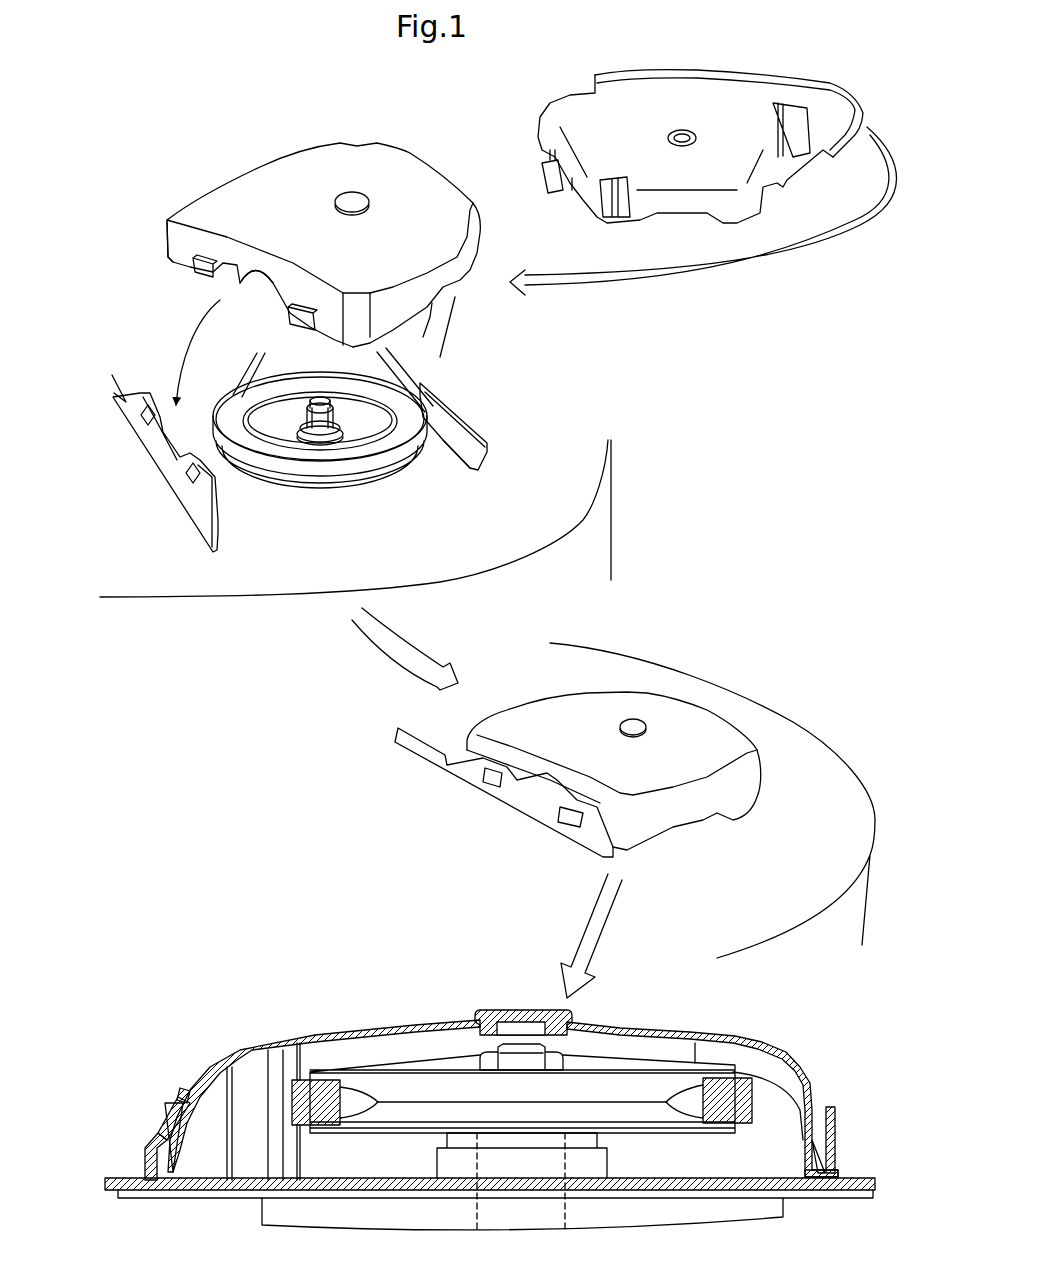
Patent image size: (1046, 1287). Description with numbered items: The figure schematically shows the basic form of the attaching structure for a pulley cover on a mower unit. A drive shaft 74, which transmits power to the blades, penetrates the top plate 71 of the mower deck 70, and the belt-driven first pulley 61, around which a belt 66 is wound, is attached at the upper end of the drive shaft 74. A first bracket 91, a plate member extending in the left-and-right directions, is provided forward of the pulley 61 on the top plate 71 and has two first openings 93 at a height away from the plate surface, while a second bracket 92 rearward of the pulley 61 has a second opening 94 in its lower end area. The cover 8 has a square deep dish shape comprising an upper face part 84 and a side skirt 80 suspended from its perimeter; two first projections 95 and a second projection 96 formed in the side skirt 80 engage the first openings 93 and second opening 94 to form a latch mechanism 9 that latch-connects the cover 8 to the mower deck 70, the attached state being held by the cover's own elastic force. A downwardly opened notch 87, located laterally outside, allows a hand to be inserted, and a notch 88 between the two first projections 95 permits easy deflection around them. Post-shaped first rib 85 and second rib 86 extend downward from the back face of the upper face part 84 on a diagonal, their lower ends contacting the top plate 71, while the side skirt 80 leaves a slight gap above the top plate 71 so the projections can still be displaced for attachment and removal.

The cover 8 is at (258, 165).
The latch mechanism 9 is at (133, 385).
The first pulley 61 is at (360, 465).
The belt 66 is at (312, 478).
The mower deck 70 is at (615, 512).
The top plate 71 is at (273, 557).
The drive shaft 74 is at (318, 403).
The side skirt 80 is at (180, 243).
The upper face part 84 is at (398, 173).
The first rib 85 is at (775, 118).
The second rib 86 is at (637, 177).
The notch 87 is at (430, 312).
The notch 88 is at (243, 275).
The first bracket 91 is at (205, 503).
The second bracket 92 is at (473, 438).
The first openings 93 is at (188, 474).
The second opening 94 is at (443, 446).
The first projections 95 is at (200, 278).
The second projection 96 is at (542, 180).